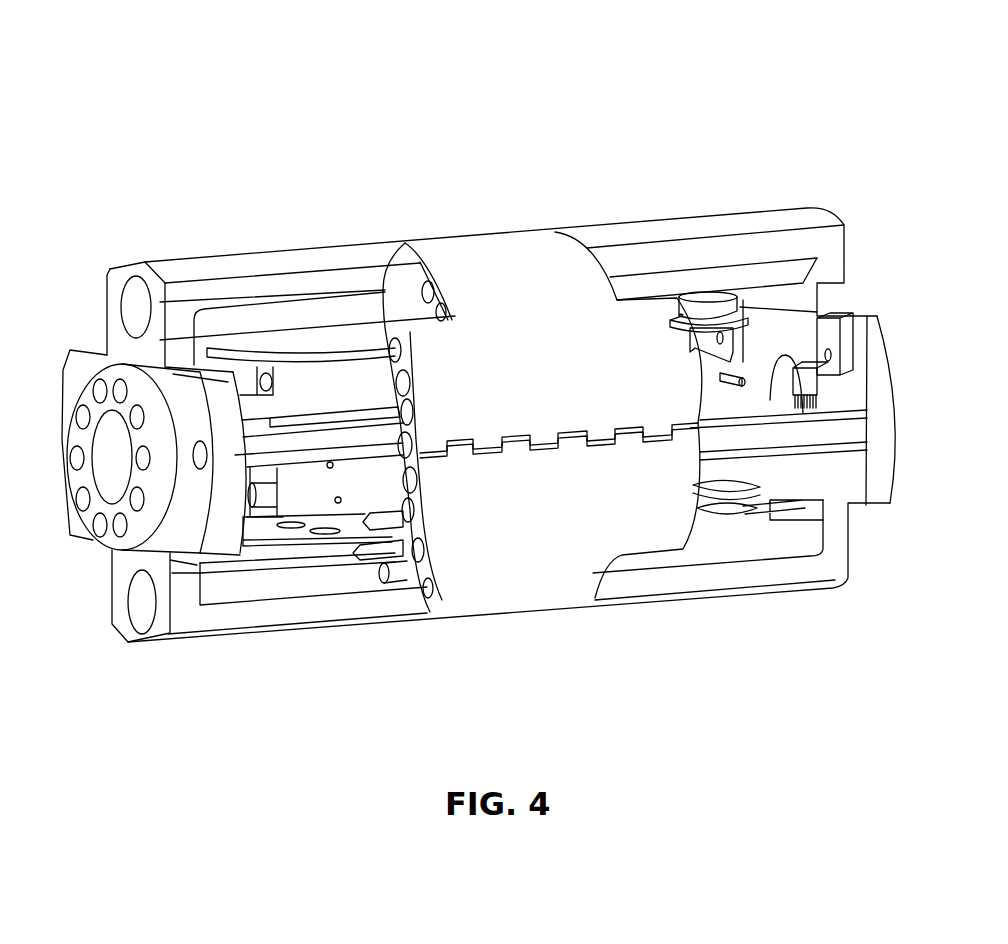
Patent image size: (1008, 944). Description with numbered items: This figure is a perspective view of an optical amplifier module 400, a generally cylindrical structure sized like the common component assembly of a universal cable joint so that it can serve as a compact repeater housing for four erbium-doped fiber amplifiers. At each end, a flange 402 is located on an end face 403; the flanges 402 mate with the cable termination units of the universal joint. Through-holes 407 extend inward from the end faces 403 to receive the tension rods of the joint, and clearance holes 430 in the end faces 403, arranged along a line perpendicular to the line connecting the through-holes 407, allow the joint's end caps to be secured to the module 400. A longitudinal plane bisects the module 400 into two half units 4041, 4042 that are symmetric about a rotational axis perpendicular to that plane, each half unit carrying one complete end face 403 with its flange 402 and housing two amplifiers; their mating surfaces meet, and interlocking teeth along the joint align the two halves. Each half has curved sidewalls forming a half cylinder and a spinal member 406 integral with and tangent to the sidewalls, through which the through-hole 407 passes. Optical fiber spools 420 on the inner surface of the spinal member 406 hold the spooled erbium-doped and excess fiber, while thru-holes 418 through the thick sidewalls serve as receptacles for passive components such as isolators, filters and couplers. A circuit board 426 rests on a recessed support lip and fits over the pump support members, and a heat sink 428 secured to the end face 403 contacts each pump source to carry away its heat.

The optical amplifier module 400 is at (330, 75).
The flange 402 is at (88, 520).
The end face 403 is at (73, 363).
The half unit 4041 is at (487, 248).
The half unit 4042 is at (543, 597).
The spinal member 406 is at (610, 230).
The through-hole 407 is at (132, 290).
The thru-hole (receptacle) 418 is at (395, 323).
The optical fiber spool 420 is at (332, 345).
The circuit board 426 is at (740, 412).
The heat sink 428 is at (837, 320).
The clearance hole 430 is at (199, 452).